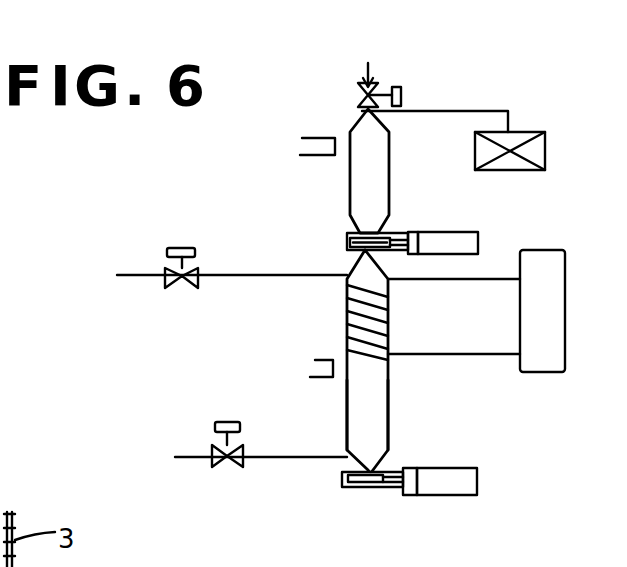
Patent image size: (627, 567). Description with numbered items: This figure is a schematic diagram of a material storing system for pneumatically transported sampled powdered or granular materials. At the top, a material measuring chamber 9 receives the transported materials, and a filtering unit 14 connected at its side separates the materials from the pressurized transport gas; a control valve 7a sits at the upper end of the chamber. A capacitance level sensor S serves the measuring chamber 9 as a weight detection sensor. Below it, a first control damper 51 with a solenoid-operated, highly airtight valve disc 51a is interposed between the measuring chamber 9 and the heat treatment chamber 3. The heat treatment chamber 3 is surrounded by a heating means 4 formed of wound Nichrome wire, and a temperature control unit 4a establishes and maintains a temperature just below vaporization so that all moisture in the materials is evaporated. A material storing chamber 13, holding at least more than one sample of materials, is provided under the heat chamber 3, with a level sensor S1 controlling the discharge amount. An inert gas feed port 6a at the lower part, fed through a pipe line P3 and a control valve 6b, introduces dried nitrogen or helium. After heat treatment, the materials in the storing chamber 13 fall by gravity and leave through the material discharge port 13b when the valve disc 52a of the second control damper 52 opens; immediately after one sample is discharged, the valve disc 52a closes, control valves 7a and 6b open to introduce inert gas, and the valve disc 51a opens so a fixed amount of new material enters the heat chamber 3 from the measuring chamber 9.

The control valve 7a is at (372, 84).
The filtering unit 14 is at (540, 152).
The material measuring chamber 9 is at (385, 190).
The capacitance level sensor S is at (310, 138).
The valve disc 51a is at (350, 233).
The first control damper 51 is at (438, 243).
The heat treatment chamber 3 is at (362, 268).
The heating means 4 is at (388, 318).
The temperature control unit 4a is at (553, 320).
The level sensor S1 is at (325, 365).
The material storing chamber 13 is at (375, 412).
The inert gas feed port 6a is at (315, 453).
The control valve 6b is at (215, 462).
The pipe line P3 is at (277, 458).
The material discharge port 13b is at (363, 488).
The valve disc 52a is at (355, 487).
The second control damper 52 is at (452, 482).